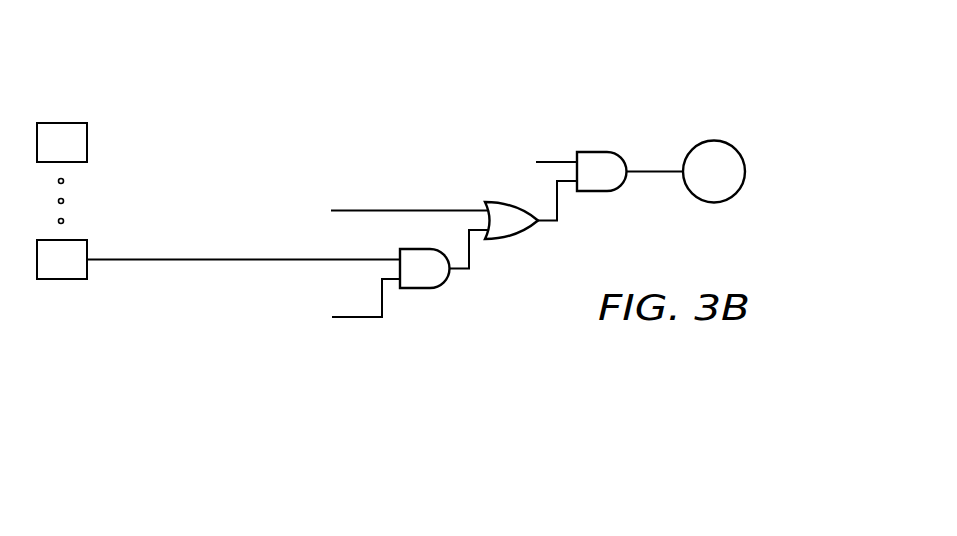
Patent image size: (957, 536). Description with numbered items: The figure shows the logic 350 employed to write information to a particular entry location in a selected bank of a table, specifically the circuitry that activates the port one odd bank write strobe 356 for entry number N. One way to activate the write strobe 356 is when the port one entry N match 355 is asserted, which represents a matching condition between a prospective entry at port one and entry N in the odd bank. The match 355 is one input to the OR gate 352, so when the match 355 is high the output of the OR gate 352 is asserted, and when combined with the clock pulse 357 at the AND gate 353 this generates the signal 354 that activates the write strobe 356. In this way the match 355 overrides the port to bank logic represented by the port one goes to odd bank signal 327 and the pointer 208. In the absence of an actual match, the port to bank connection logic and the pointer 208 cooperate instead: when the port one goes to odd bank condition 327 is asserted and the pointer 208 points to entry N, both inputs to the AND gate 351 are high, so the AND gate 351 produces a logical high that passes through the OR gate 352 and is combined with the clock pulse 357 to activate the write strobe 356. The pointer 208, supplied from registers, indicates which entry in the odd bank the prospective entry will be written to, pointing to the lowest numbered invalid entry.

The pointer 208 is at (149, 262).
The port 1 goes to odd bank signal 327 is at (357, 320).
The odd bank write strobe generation circuit 350 is at (345, 133).
The AND gate 351 is at (425, 290).
The OR gate 352 is at (510, 240).
The AND gate 353 is at (600, 193).
The signal 354 is at (660, 173).
The port 1 entry N match 355 is at (209, 192).
The port 1 odd bank write strobe 356 is at (716, 139).
The clock pulse 357 is at (552, 160).